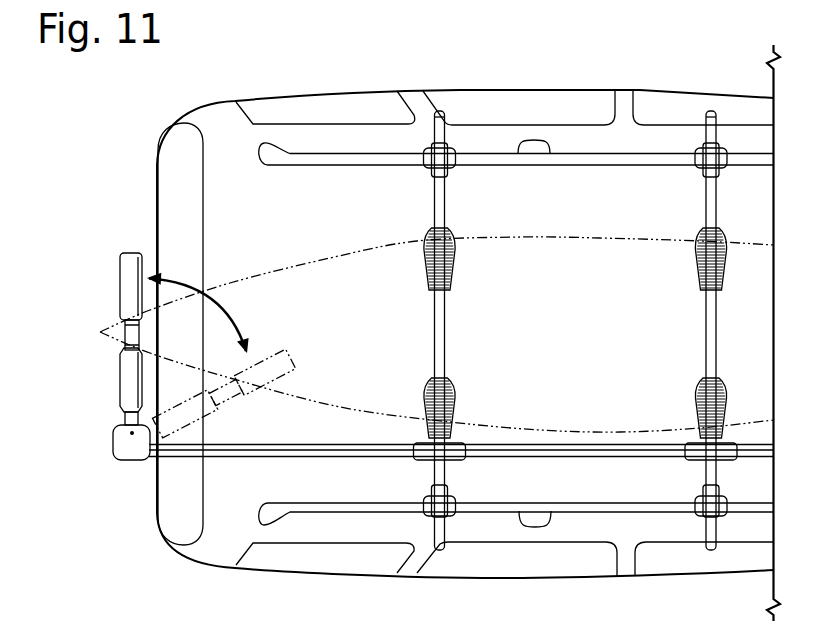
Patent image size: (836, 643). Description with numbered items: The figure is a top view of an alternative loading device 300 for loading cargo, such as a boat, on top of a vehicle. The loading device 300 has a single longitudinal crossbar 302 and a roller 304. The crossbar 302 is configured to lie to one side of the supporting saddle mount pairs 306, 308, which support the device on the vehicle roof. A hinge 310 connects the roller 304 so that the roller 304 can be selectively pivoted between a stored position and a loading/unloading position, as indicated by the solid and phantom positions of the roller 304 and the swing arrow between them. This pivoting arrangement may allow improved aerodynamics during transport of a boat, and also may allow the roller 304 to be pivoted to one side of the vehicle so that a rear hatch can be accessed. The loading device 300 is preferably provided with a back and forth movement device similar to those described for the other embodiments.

The loading device 300 is at (671, 50).
The longitudinal crossbar 302 is at (250, 458).
The roller 304 is at (120, 268).
The saddle mount pair 306 is at (697, 398).
The saddle mount pair 308 is at (454, 270).
The hinge 310 is at (132, 461).